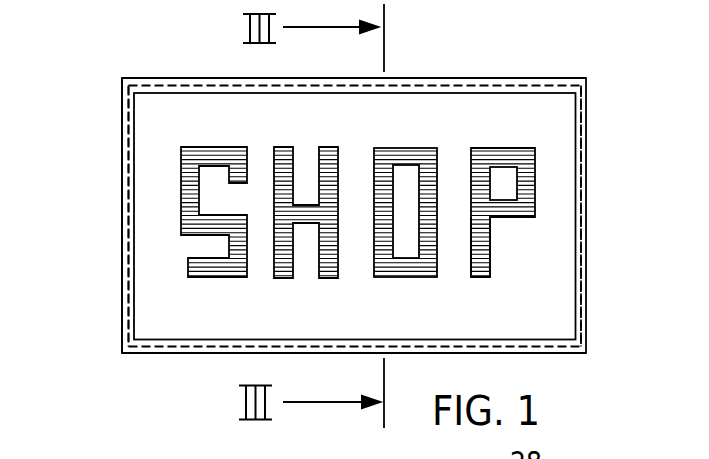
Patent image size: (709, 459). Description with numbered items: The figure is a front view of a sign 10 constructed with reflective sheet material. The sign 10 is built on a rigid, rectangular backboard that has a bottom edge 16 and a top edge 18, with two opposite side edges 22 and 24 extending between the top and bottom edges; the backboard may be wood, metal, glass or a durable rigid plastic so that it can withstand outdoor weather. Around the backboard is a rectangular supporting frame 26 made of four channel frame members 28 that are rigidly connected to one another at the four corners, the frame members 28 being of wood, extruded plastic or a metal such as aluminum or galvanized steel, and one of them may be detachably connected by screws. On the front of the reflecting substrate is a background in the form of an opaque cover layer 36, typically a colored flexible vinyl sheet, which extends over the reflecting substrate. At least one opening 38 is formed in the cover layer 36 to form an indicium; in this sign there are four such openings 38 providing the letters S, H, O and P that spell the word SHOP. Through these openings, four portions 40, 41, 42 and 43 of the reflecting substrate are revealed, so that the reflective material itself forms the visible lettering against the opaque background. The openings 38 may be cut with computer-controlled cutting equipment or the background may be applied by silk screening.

The sign 10 is at (590, 156).
The bottom edge 16 is at (543, 350).
The top edge 18 is at (518, 86).
The side edge 22 is at (127, 239).
The side edge 24 is at (584, 228).
The supporting frame 26 is at (457, 78).
The channel frame member 28 is at (122, 285).
The opaque cover layer 36 is at (543, 295).
The opening 38 is at (492, 257).
The portion of the reflecting substrate 40 is at (209, 147).
The portion of the reflecting substrate 41 is at (324, 147).
The portion of the reflecting substrate 42 is at (408, 148).
The portion of the reflecting substrate 43 is at (502, 148).